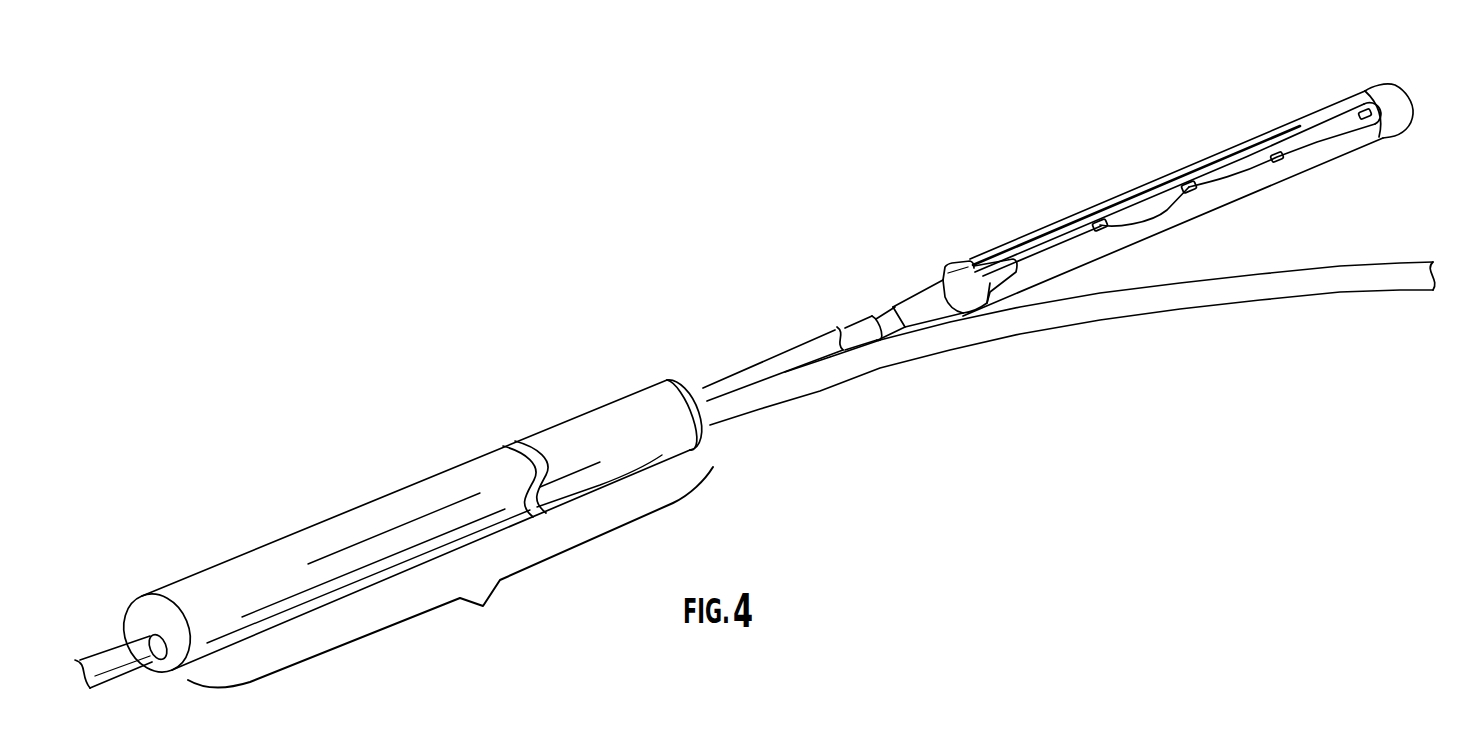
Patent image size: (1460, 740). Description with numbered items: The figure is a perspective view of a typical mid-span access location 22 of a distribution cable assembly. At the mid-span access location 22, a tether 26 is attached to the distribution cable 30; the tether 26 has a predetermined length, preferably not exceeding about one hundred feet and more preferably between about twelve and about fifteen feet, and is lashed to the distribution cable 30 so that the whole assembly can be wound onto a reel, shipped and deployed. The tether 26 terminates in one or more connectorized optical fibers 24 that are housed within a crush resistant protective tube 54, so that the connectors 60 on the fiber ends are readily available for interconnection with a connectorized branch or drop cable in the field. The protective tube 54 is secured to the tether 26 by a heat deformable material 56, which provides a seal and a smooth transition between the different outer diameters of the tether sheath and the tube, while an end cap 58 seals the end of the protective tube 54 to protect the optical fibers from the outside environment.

The mid-span access location 22 is at (412, 534).
The connectorized optical fibers 24 is at (1022, 257).
The tether 26 is at (858, 335).
The distribution cable 30 is at (100, 662).
The crush resistant tube 54 is at (1330, 150).
The heat deformable material 56 is at (918, 305).
The end cap 58 is at (1397, 93).
The connectors 60 is at (1098, 222).